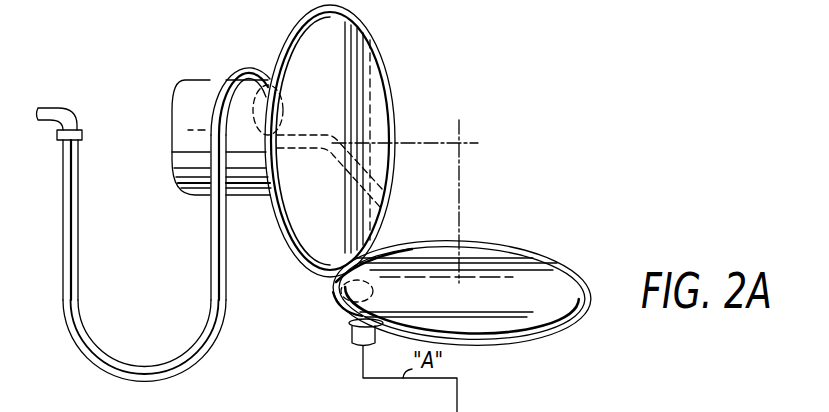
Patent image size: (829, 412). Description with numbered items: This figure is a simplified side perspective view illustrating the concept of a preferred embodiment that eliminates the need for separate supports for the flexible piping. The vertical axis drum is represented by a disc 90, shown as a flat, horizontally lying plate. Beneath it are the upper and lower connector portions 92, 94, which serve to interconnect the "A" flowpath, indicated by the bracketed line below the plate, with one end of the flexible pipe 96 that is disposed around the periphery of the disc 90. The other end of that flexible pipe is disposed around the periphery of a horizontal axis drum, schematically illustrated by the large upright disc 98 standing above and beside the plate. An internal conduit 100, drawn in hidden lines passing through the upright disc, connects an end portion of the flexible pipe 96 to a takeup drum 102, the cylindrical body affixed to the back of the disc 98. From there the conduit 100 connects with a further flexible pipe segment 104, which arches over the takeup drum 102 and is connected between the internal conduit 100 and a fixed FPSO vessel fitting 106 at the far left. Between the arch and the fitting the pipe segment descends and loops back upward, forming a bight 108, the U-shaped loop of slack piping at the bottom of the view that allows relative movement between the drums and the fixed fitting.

The disc 90 is at (498, 270).
The upper connector portion 92 is at (350, 323).
The lower connector portion 94 is at (352, 346).
The flexible pipe 96 is at (376, 250).
The disc 98 is at (352, 67).
The internal conduit 100 is at (265, 75).
The takeup drum 102 is at (183, 95).
The flexible pipe segment 104 is at (234, 80).
The fixed FPSO vessel fitting 106 is at (66, 107).
The bight 108 is at (142, 367).